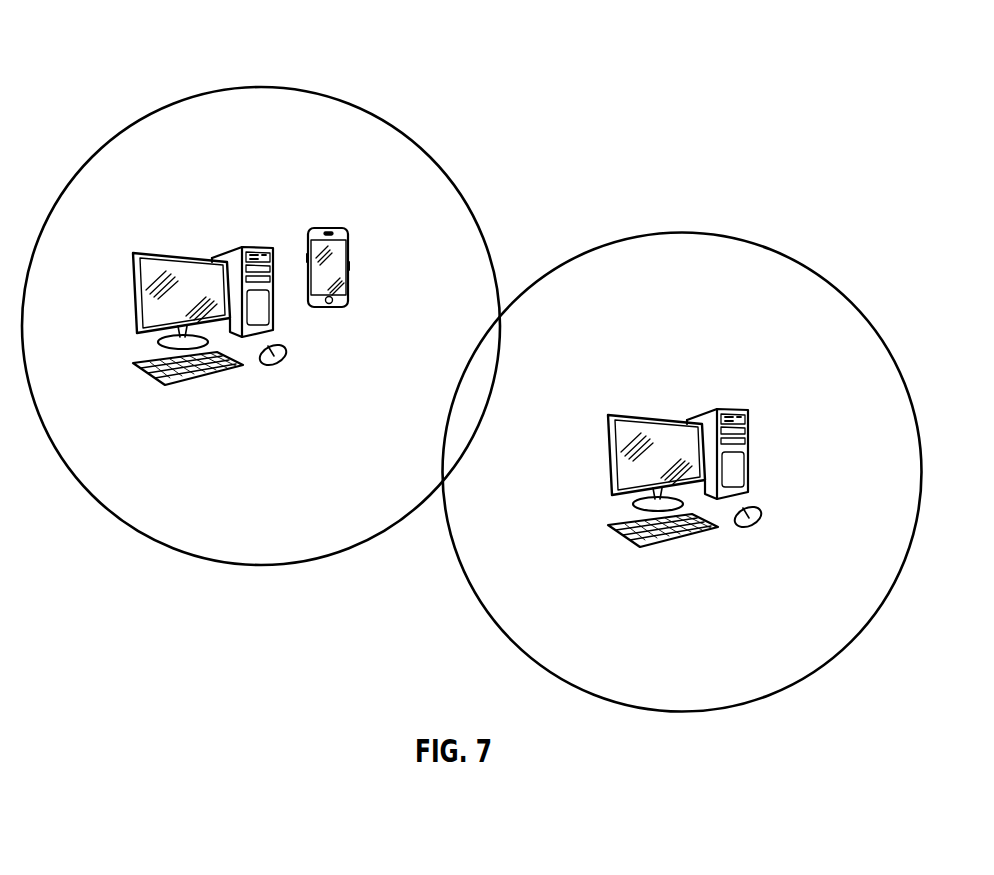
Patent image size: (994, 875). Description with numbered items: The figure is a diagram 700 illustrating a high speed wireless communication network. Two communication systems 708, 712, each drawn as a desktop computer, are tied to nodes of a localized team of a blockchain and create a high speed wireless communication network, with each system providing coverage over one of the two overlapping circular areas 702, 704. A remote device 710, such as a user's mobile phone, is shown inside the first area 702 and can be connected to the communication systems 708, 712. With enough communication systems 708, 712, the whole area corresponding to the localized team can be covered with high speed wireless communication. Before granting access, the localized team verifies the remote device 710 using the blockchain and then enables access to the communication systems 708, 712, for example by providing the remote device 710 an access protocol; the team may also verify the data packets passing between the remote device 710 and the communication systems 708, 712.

The diagram 700 is at (128, 45).
The area 702 is at (130, 127).
The area 704 is at (607, 242).
The communication system 708 is at (180, 253).
The remote device 710 is at (328, 228).
The communication system 712 is at (655, 415).